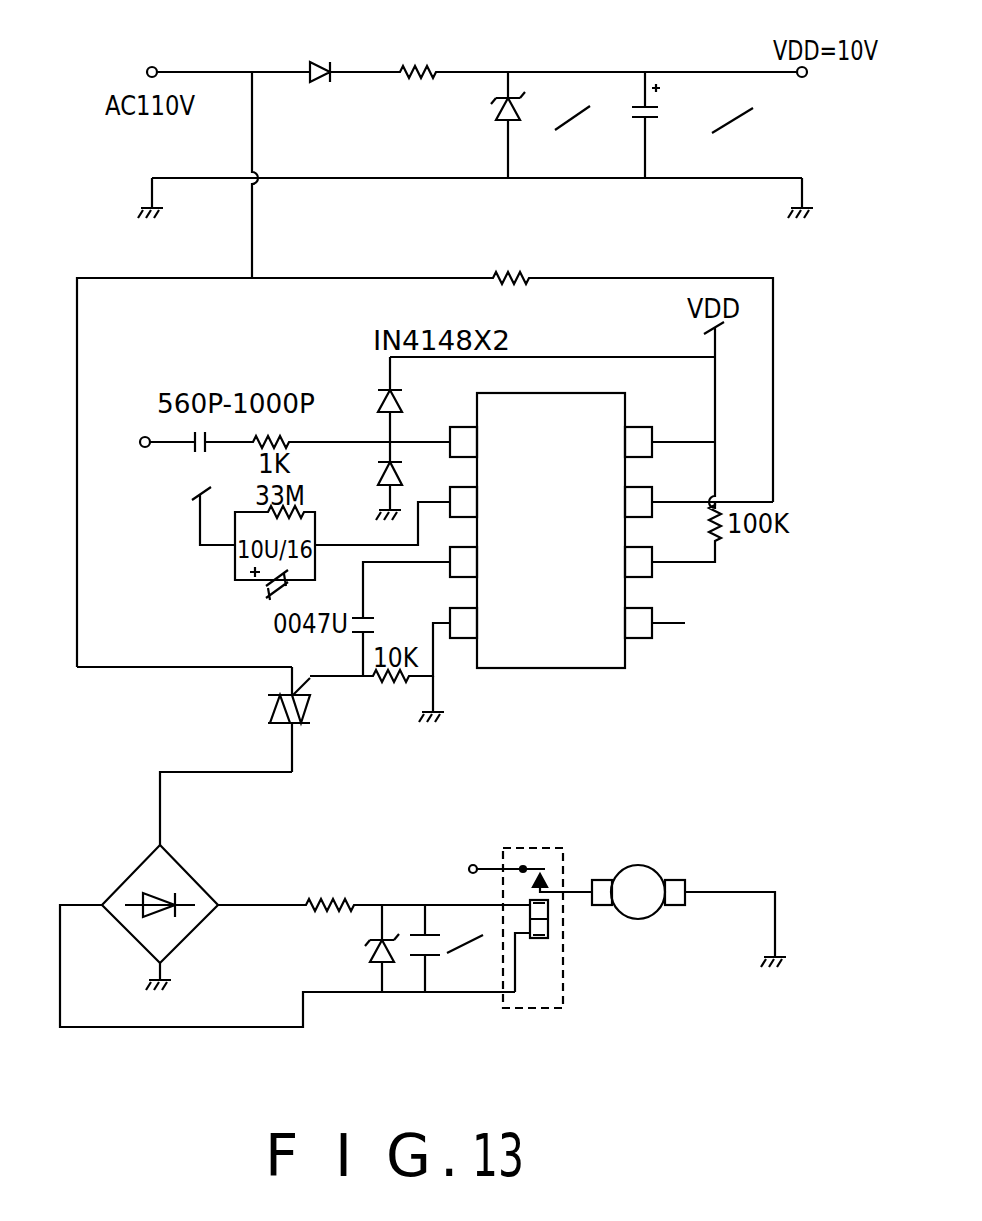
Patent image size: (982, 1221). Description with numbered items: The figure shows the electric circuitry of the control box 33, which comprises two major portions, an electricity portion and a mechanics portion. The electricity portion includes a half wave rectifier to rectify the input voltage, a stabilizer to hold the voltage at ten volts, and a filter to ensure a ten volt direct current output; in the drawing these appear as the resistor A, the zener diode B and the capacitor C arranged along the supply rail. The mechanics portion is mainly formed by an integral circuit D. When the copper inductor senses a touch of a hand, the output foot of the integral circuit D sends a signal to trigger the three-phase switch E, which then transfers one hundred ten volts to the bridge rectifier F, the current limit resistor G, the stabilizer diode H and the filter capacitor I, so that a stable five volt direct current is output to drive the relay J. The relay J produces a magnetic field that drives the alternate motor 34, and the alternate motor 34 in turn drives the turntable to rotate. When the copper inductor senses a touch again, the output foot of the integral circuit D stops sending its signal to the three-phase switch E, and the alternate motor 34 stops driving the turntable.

The resistor R1 A is at (405, 65).
The zener diode 10V 0.5W B is at (502, 92).
The electrolytic capacitor 100U 16V C is at (638, 100).
The integrated circuit HT-7712 D is at (537, 655).
The three-phase switch E is at (295, 727).
The bridge rectifier F is at (122, 887).
The current limit resistor G is at (303, 893).
The stabilizer diode H is at (377, 962).
The filter capacitor I is at (435, 965).
The relay J is at (563, 1003).
The control box 33 is at (655, 915).
The alternate motor 34 is at (143, 670).